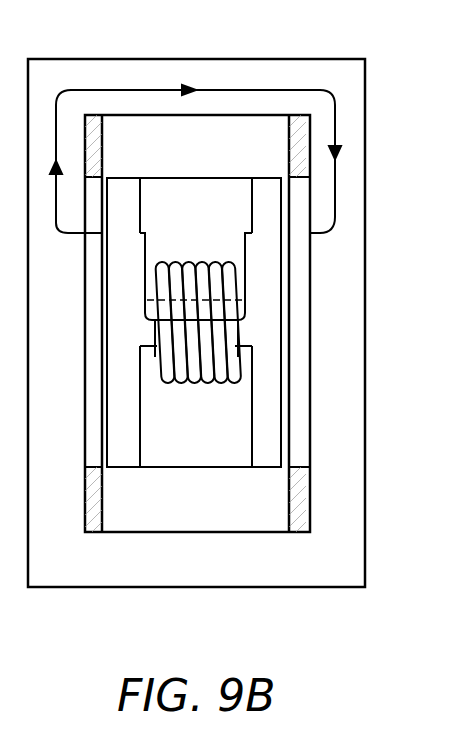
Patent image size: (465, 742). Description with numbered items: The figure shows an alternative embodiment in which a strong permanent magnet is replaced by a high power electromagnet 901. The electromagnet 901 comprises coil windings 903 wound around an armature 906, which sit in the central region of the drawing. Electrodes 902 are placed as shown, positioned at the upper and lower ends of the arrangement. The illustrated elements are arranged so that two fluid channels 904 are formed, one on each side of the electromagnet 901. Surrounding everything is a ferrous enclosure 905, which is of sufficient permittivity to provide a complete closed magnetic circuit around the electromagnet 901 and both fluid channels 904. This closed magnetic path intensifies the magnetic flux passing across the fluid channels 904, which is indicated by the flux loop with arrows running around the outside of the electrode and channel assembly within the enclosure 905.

The high power electromagnet 901 is at (221, 457).
The electrodes 902 is at (298, 138).
The coil windings 903 is at (225, 377).
The fluid channels 904 is at (93, 192).
The ferrous enclosure 905 is at (343, 538).
The armature 906 is at (247, 335).